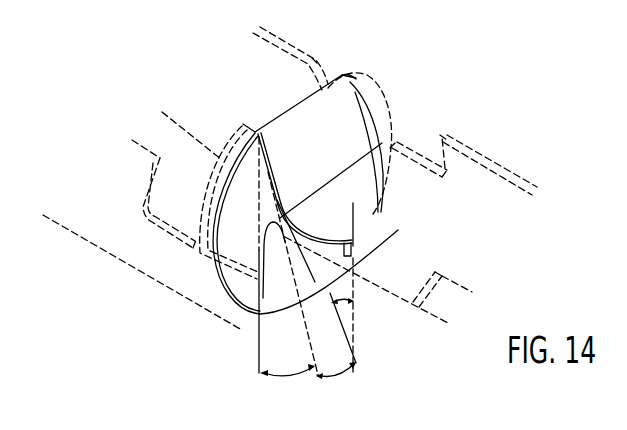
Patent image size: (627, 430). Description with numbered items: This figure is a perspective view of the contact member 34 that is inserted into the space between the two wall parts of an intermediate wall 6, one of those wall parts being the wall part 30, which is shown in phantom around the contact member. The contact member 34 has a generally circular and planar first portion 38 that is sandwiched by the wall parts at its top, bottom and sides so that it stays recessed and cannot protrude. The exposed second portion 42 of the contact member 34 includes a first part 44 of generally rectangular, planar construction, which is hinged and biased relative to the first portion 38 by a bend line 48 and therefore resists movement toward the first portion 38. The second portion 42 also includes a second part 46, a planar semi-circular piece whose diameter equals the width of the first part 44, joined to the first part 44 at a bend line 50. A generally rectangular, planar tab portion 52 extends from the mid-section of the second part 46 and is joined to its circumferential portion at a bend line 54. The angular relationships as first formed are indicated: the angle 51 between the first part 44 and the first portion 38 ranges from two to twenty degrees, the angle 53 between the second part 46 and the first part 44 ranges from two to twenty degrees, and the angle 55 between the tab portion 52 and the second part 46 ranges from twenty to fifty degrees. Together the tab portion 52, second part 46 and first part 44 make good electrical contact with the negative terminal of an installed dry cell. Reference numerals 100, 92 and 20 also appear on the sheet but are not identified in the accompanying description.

The tool assembly 100 is at (0, 5).
The handle 92 is at (117, 0).
The intermediate wall 6 is at (211, 148).
The wall part 30 is at (372, 103).
The first portion 38 is at (216, 223).
The second part 46 is at (362, 213).
The bend line 48 is at (270, 130).
The bend line 50 is at (330, 196).
The first part 44 is at (361, 147).
The corner edge 20 is at (342, 74).
The second portion 42 is at (357, 96).
The contact member 34 is at (522, 92).
The bend line 54 is at (357, 240).
The tab portion 52 is at (356, 253).
The angle 51 is at (263, 375).
The angle 53 is at (343, 369).
The angle 55 is at (343, 306).